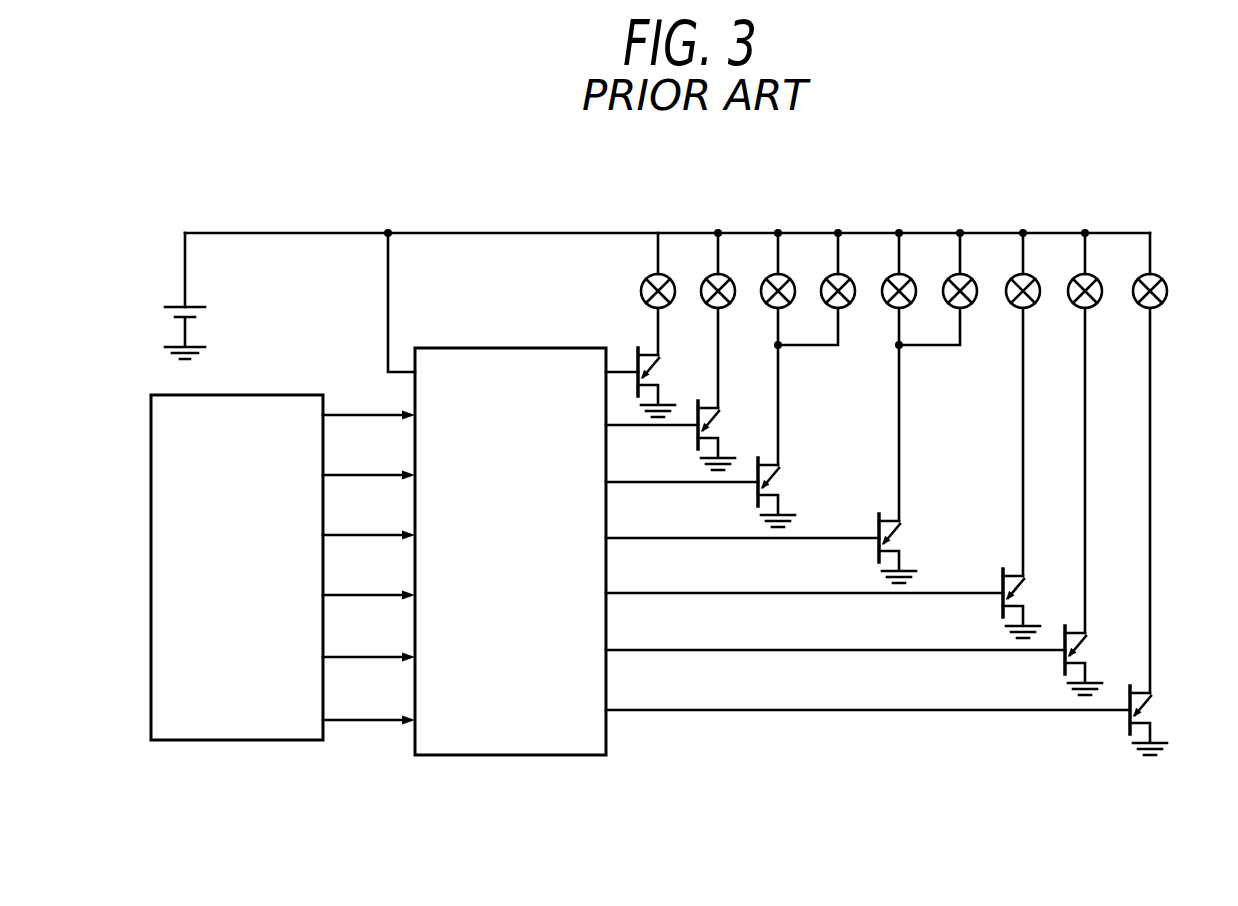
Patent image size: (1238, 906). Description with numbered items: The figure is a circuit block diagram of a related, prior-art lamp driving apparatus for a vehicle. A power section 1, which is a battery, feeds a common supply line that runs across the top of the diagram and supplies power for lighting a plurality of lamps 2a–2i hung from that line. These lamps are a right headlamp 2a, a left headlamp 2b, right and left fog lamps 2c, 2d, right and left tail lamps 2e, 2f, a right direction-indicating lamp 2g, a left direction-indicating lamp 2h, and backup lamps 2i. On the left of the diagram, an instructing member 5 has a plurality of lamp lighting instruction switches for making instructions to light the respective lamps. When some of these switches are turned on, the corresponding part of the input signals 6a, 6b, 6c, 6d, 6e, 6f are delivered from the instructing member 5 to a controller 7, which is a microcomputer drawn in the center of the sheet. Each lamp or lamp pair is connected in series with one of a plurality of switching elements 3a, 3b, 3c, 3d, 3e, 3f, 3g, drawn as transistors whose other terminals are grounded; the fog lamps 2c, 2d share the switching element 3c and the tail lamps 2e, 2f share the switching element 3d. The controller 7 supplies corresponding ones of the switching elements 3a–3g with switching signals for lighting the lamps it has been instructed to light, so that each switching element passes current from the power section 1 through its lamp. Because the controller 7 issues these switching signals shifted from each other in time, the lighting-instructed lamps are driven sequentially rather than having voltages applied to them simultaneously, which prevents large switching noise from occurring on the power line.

The power section 1 is at (173, 305).
The instructing member 5 is at (245, 395).
The input signal 6a is at (336, 414).
The input signal 6b is at (343, 475).
The input signal 6c is at (343, 535).
The input signal 6d is at (343, 595).
The input signal 6e is at (343, 657).
The input signal 6f is at (343, 720).
The controller 7 is at (503, 348).
The headlamp (right) 2a is at (665, 273).
The headlamp (left) 2b is at (725, 273).
The fog lamp 2c is at (785, 273).
The fog lamp 2d is at (846, 273).
The tail lamp 2e is at (907, 273).
The tail lamp 2f is at (955, 273).
The direction-indicating lamp (right) 2g is at (1031, 273).
The direction-indicating lamp (left) 2h is at (1093, 273).
The backup lamp 2i is at (1158, 273).
The switching element 3a is at (658, 371).
The switching element 3b is at (718, 424).
The switching element 3c is at (778, 481).
The switching element 3d is at (899, 537).
The switching element 3e is at (1023, 592).
The switching element 3f is at (1085, 649).
The switching element 3g is at (1150, 709).